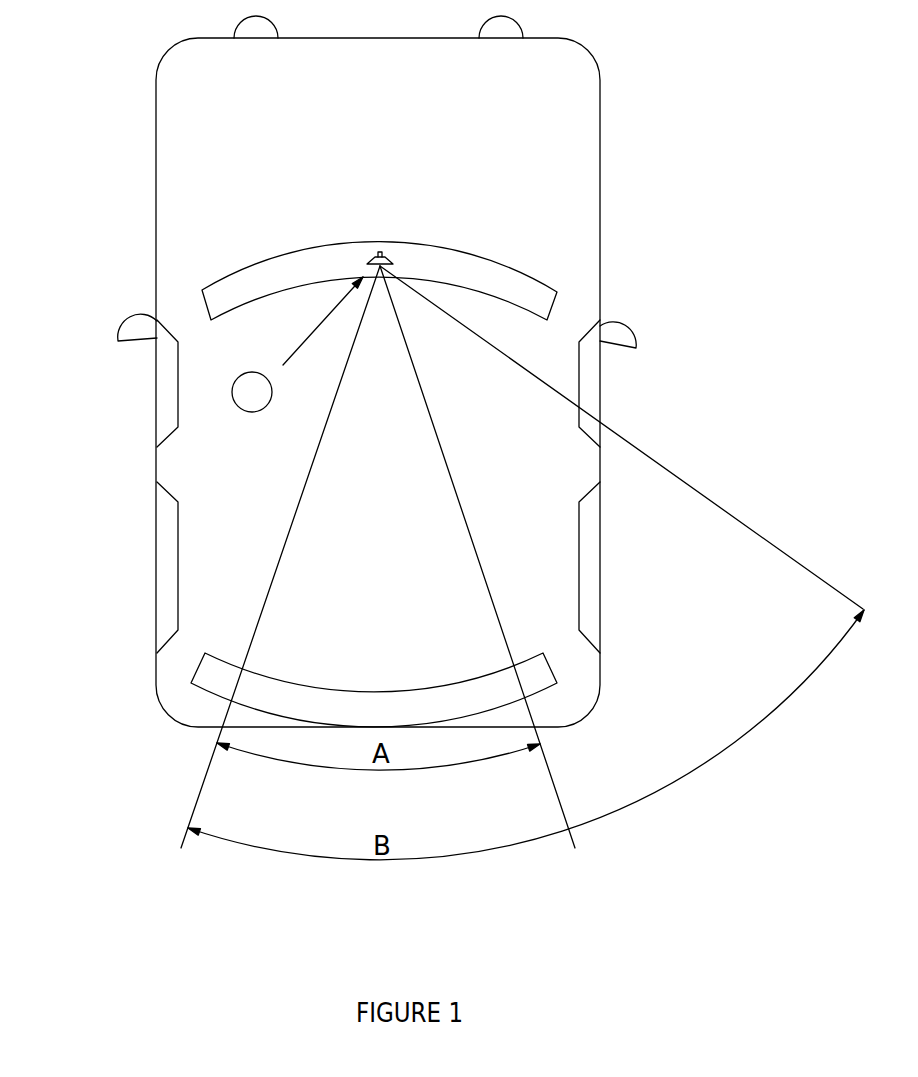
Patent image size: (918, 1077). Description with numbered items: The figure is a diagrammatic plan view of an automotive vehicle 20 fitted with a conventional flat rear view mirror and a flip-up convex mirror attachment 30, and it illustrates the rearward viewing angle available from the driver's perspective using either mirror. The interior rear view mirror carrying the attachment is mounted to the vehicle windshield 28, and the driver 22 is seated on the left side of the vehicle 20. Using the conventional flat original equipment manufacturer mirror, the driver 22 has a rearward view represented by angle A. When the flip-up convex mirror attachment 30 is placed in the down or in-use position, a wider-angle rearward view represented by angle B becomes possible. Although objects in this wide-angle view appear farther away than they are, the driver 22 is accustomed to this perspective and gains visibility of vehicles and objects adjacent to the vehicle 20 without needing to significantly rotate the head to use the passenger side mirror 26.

The automotive vehicle 20 is at (136, 142).
The driver 22 is at (252, 398).
The passenger side mirror 26 is at (617, 332).
The windshield 28 is at (257, 280).
The flip-up convex mirror attachment 30 is at (389, 259).